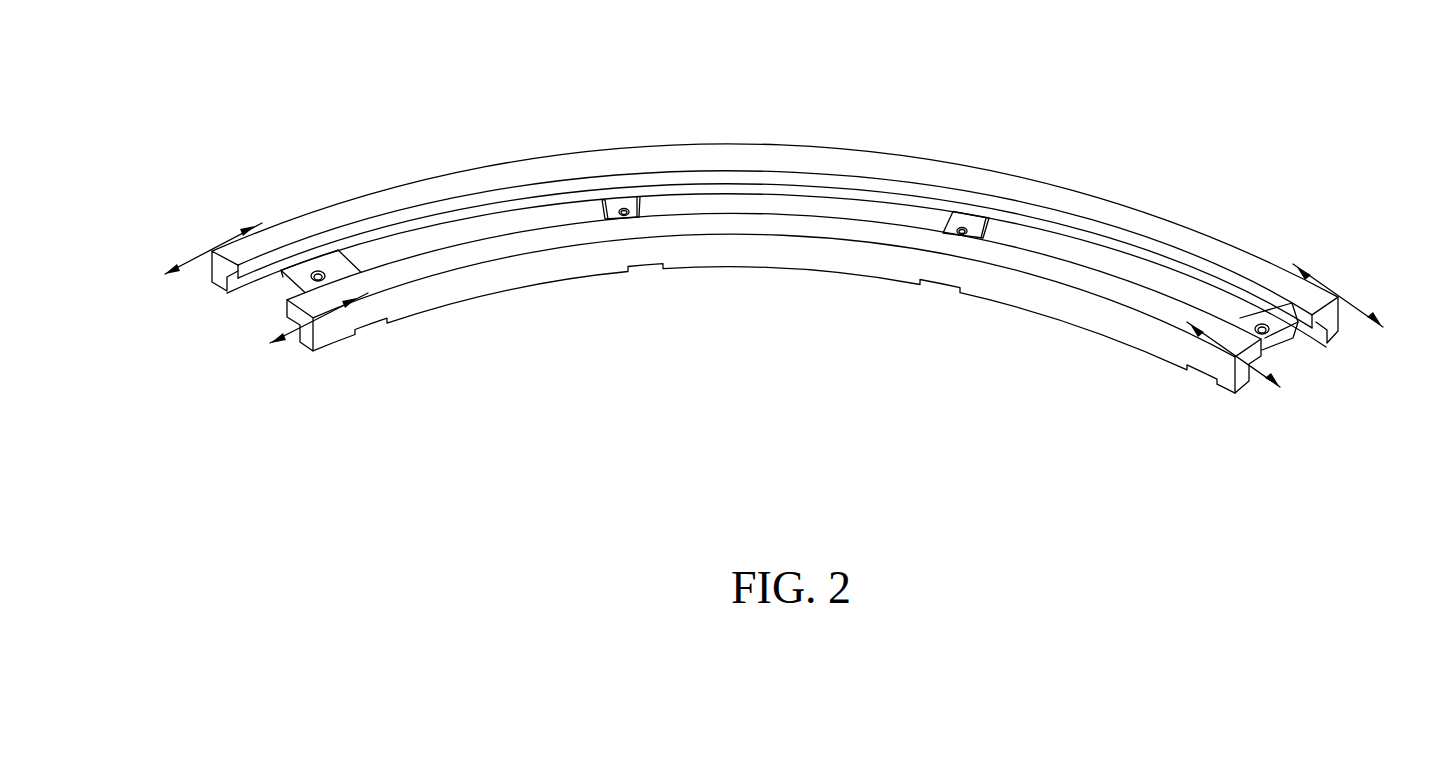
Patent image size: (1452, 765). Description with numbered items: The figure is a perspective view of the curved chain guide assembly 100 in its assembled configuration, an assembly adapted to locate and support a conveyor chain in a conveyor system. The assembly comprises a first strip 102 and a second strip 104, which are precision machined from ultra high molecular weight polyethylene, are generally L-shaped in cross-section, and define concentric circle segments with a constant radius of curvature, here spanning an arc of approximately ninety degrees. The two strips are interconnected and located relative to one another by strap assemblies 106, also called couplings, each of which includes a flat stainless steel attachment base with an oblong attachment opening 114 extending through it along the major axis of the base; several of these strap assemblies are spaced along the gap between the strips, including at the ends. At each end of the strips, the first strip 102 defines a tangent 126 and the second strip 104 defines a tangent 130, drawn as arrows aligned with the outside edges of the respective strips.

The curved chain guide assembly 100 is at (774, 227).
The first strip 102 is at (575, 167).
The second strip 104 is at (723, 256).
The strap assembly 106 is at (743, 247).
The oblong attachment opening 114 is at (328, 269).
The tangent 126 is at (200, 255).
The tangent 130 is at (292, 345).